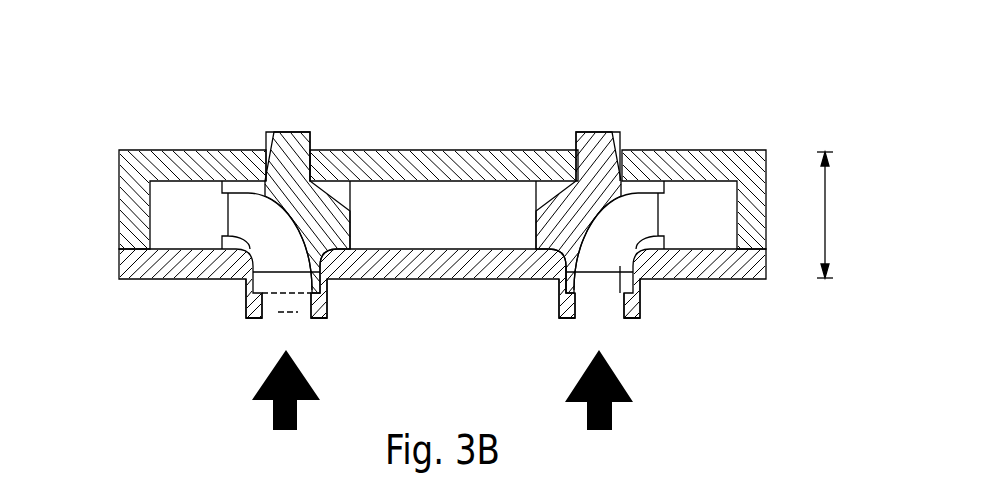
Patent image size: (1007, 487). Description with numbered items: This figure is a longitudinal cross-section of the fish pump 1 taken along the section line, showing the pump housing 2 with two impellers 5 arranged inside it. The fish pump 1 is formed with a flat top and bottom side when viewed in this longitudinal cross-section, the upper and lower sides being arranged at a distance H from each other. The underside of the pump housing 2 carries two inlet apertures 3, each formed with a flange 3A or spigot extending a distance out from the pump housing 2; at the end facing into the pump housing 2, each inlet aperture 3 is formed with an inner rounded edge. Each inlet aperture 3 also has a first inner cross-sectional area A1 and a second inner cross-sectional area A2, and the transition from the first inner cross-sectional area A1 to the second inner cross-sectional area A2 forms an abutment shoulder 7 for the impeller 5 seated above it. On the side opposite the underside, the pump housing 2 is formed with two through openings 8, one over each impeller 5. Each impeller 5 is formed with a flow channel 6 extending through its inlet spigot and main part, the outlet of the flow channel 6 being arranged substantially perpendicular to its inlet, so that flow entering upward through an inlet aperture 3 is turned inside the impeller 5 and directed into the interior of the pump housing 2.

The fish pump 1 is at (109, 107).
The pump housing 2 is at (118, 214).
The inlet aperture 3 is at (204, 329).
The flange 3A is at (242, 328).
The impeller 5 is at (356, 216).
The flow channel 6 is at (443, 241).
The abutment shoulder 7 is at (564, 307).
The through opening 8 is at (258, 145).
The first inner cross-sectional area A1 is at (334, 306).
The second inner cross-sectional area A2 is at (330, 350).